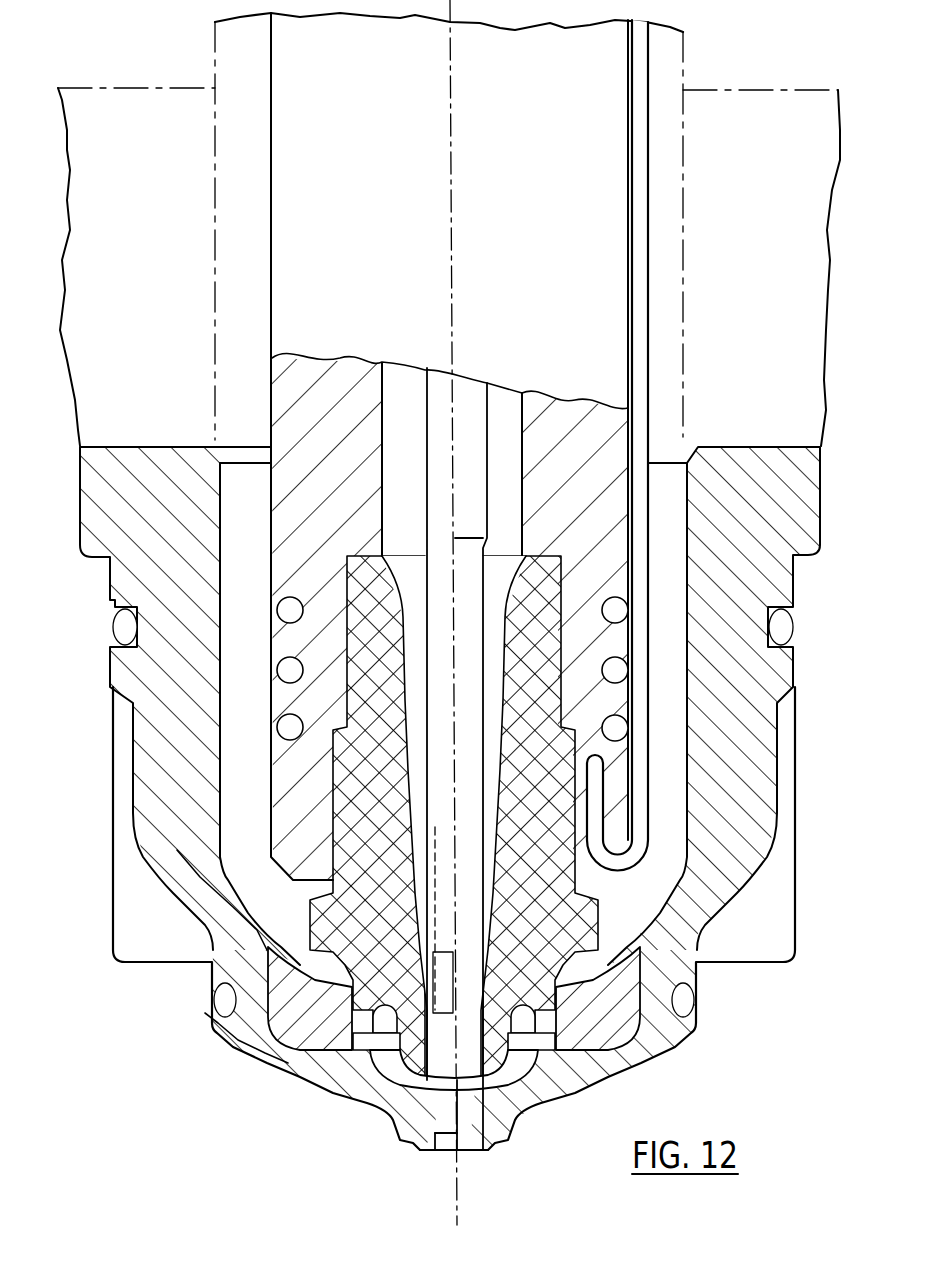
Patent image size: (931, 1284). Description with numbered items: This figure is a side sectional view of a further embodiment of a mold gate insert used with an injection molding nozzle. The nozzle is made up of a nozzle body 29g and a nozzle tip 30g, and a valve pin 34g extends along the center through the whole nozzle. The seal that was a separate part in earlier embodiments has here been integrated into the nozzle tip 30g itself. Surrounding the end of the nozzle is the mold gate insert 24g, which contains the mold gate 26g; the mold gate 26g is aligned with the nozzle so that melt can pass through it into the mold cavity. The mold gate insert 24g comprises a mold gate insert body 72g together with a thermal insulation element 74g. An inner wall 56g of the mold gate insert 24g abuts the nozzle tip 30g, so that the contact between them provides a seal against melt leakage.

The mold gate insert 24g is at (113, 507).
The nozzle body 29g is at (598, 437).
The nozzle tip 30g is at (552, 607).
The mold gate insert body 72g is at (155, 713).
The thermal insulation element 74g is at (613, 1023).
The inner wall 56g is at (357, 1060).
The mold gate 26g is at (447, 1143).
The valve pin 34g is at (465, 1130).